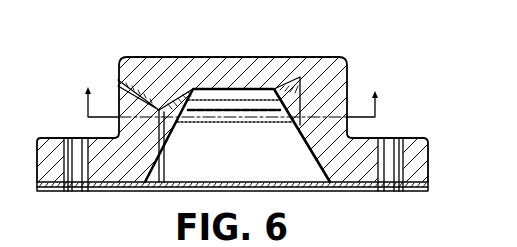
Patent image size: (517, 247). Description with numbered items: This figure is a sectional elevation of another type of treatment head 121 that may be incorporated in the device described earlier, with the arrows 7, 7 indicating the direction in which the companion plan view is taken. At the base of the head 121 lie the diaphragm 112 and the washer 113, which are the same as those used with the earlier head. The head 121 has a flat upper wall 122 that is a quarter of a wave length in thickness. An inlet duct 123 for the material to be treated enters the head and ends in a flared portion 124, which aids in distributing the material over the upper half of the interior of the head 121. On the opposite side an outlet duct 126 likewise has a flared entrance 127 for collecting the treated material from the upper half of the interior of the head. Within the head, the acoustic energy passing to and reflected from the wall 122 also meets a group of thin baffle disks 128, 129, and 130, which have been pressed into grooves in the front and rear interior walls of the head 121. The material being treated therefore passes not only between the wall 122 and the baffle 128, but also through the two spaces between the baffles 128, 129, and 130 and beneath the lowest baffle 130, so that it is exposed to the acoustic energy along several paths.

The arrows 7 is at (233, 91).
The diaphragm 112 is at (312, 193).
The washer 113 is at (429, 186).
The treatment head 121 is at (328, 85).
The flat upper wall 122 is at (258, 86).
The inlet duct 123 is at (118, 82).
The flared portion 124 is at (164, 122).
The outlet duct 126 is at (300, 78).
The flared entrance 127 is at (296, 103).
The baffle disk 128 is at (247, 98).
The baffle disk 129 is at (220, 110).
The baffle disk 130 is at (218, 126).